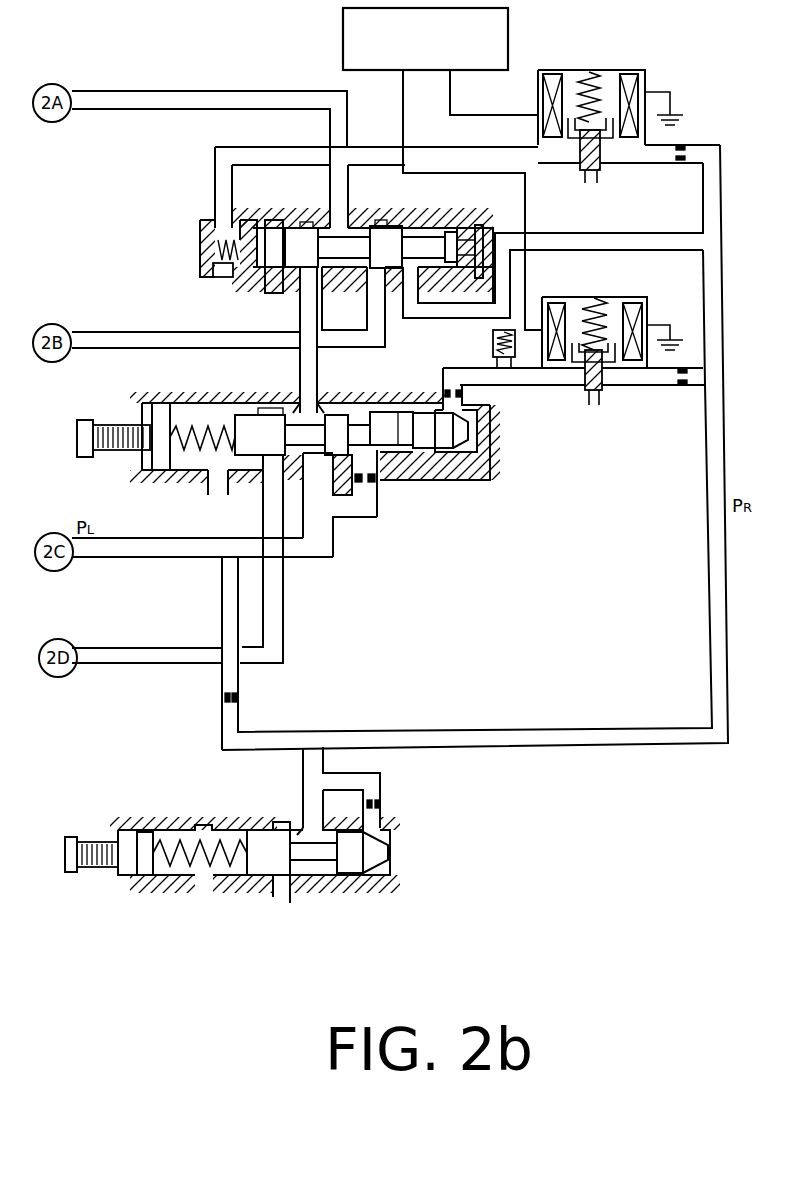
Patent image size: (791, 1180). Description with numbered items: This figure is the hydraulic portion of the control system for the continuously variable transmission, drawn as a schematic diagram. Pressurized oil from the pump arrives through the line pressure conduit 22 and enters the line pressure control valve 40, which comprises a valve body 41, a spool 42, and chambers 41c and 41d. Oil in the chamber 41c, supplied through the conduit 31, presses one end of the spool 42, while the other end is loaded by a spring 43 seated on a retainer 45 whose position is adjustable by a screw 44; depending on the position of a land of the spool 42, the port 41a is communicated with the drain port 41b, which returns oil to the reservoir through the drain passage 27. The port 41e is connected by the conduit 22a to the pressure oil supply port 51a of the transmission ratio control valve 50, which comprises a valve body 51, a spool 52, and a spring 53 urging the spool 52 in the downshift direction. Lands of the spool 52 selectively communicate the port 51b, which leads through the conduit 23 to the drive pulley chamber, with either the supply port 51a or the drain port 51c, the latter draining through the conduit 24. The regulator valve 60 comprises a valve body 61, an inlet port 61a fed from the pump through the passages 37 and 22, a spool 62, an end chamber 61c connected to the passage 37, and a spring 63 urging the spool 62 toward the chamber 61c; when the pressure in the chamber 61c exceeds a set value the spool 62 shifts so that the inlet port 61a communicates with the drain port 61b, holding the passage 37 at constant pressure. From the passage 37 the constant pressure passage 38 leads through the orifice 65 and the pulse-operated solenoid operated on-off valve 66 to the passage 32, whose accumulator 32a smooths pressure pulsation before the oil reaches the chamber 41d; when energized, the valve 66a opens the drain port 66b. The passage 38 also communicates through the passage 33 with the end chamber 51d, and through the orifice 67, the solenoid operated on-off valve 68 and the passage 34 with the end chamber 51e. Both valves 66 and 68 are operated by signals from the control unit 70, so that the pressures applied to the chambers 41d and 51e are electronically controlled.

The line pressure conduit 22 is at (131, 540).
The conduit 22a is at (298, 320).
The conduit 23 is at (163, 98).
The conduit 24 is at (178, 342).
The drain passage 27 is at (146, 628).
The conduit 31 is at (360, 508).
The passage 32 is at (528, 378).
The accumulator 32a is at (492, 360).
The passage 33 is at (619, 236).
The passage 34 is at (449, 153).
The passage 37 is at (277, 731).
The constant pressure passage 38 is at (716, 567).
The line pressure control valve 40 is at (454, 492).
The valve body 41 is at (424, 400).
The port 41a is at (312, 455).
The drain port 41b is at (267, 478).
The chamber 41c is at (380, 483).
The chamber 41d is at (469, 450).
The port 41e is at (296, 405).
The spool 42 is at (343, 414).
The spring 43 is at (208, 427).
The screw 44 is at (90, 460).
The retainer 45 is at (158, 465).
The transmission ratio control valve 50 is at (456, 206).
The valve body 51 is at (388, 218).
The pressure oil supply port 51a is at (302, 283).
The port 51b is at (340, 223).
The drain port 51c is at (353, 293).
The end chamber 51d is at (420, 293).
The end chamber 51e is at (207, 264).
The spool 52 is at (290, 240).
The spring 53 is at (206, 232).
The regulator valve 60 is at (412, 847).
The valve body 61 is at (170, 879).
The inlet port 61a is at (308, 818).
The drain port 61b is at (289, 897).
The end chamber 61c is at (385, 876).
The spool 62 is at (267, 868).
The spring 63 is at (207, 828).
The orifice 65 is at (688, 388).
The solenoid operated on-off valve 66 is at (637, 296).
The valve 66a is at (603, 378).
The drain port 66b is at (594, 405).
The orifice 67 is at (690, 142).
The solenoid operated on-off valve 68 is at (639, 68).
The control unit 70 is at (508, 40).